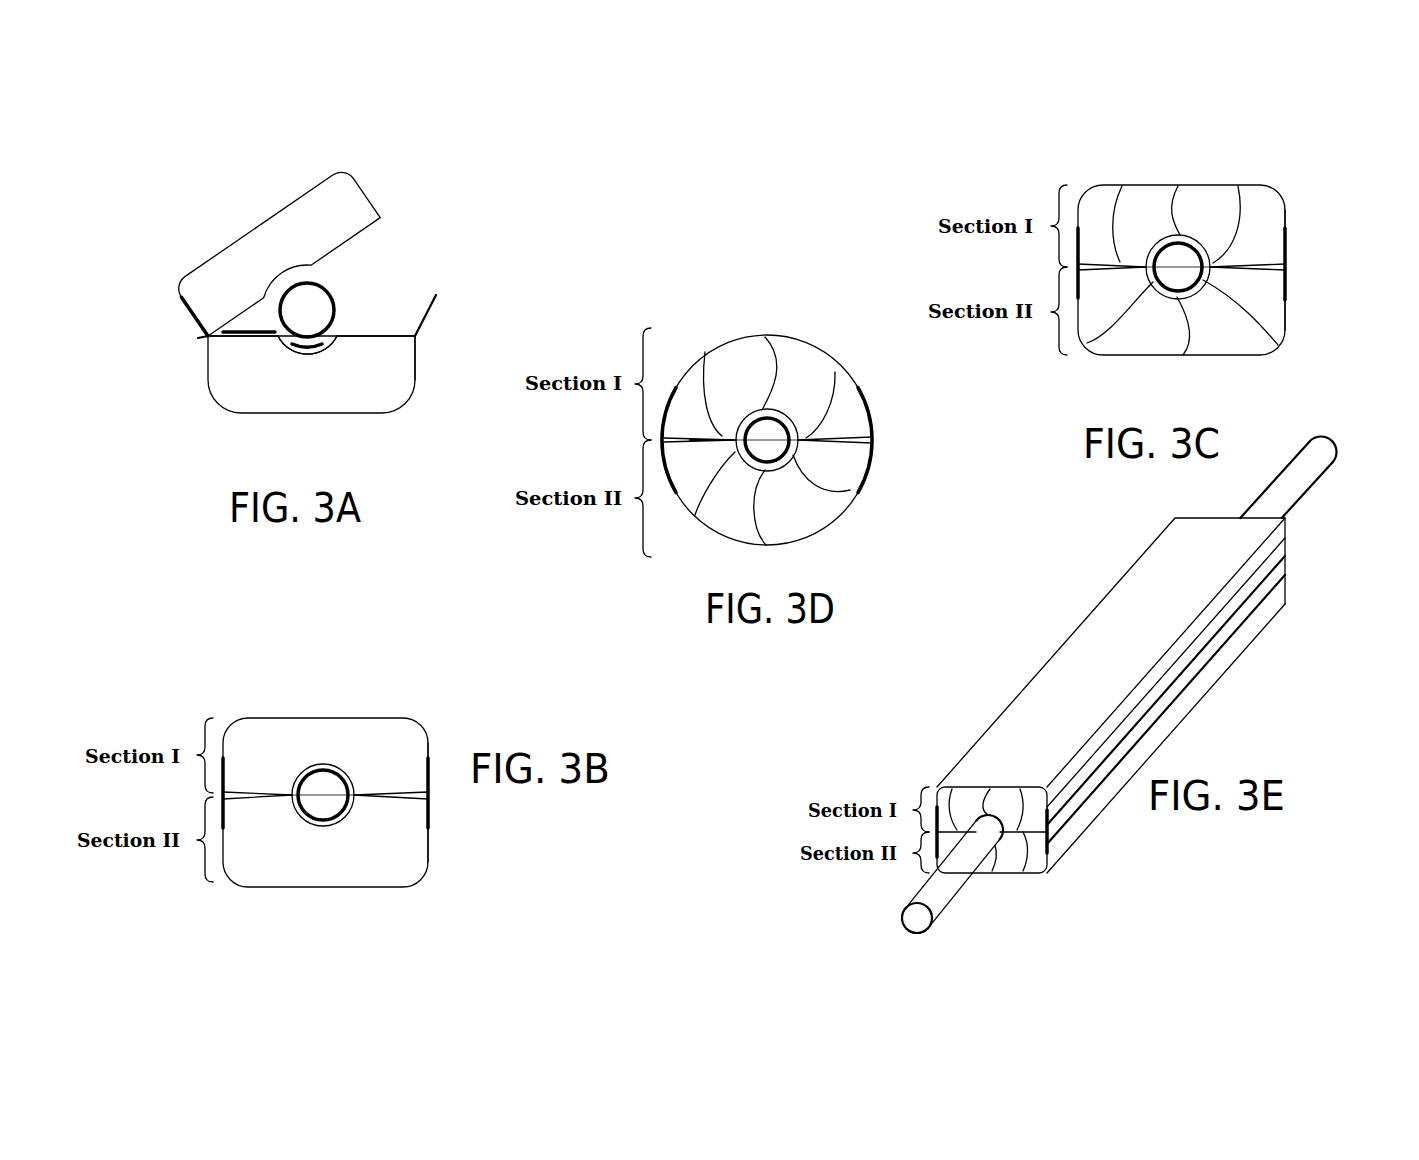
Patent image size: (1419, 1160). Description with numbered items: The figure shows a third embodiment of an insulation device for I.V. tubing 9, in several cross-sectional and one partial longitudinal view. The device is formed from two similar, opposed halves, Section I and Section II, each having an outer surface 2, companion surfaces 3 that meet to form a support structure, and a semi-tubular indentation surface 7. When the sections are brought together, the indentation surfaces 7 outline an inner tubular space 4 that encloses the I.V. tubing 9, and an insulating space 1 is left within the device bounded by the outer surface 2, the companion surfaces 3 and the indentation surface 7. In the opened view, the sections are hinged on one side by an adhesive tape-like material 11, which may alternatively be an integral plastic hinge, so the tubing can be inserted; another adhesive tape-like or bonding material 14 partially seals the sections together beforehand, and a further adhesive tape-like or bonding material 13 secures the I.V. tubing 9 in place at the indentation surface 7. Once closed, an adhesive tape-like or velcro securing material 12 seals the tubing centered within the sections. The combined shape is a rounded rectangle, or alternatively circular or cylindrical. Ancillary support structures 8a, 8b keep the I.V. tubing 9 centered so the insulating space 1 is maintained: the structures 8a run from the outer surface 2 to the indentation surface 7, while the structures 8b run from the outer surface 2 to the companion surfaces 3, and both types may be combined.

In FIG. 3A, the insulating space 1 is at (343, 217).
In FIG. 3B, the insulating space 1 is at (373, 743).
In FIG. 3D, the insulating space 1 is at (812, 367).
In FIG. 3C, the insulating space 1 is at (1263, 200).
In FIG. 3A, the outer surface 2 is at (323, 170).
In FIG. 3B, the outer surface 2 is at (322, 713).
In FIG. 3D, the outer surface 2 is at (733, 335).
In FIG. 3C, the outer surface 2 is at (1215, 182).
In FIG. 3E, the outer surface 2 is at (1060, 643).
In FIG. 3A, the companion surfaces 3 is at (333, 247).
In FIG. 3B, the companion surfaces 3 is at (265, 788).
In FIG. 3D, the companion surfaces 3 is at (833, 428).
In FIG. 3C, the companion surfaces 3 is at (1103, 260).
In FIG. 3E, the companion surfaces 3 is at (963, 825).
In FIG. 3B, the inner tubular space 4 is at (352, 790).
In FIG. 3D, the inner tubular space 4 is at (793, 428).
In FIG. 3C, the inner tubular space 4 is at (1213, 263).
In FIG. 3A, the indentation surface 7 is at (285, 262).
In FIG. 3B, the indentation surface 7 is at (310, 762).
In FIG. 3D, the indentation surface 7 is at (752, 407).
In FIG. 3C, the indentation surface 7 is at (1168, 298).
In FIG. 3E, the indentation surface 7 is at (998, 812).
In FIG. 3D, the ancillary support structures 8a is at (767, 510).
In FIG. 3C, the ancillary support structures 8a is at (1240, 307).
In FIG. 3D, the ancillary support structures 8b is at (838, 397).
In FIG. 3C, the ancillary support structures 8b is at (1228, 208).
In FIG. 3A, the I.V. tubing 9 is at (337, 290).
In FIG. 3B, the I.V. tubing 9 is at (312, 782).
In FIG. 3D, the I.V. tubing 9 is at (758, 433).
In FIG. 3C, the I.V. tubing 9 is at (1167, 255).
In FIG. 3E, the I.V. tubing 9 is at (912, 893).
In FIG. 3A, the adhesive tape-like material 11 is at (196, 337).
In FIG. 3A, the adhesive tape-like or velcro securing material 12 is at (433, 325).
In FIG. 3B, the adhesive tape-like or velcro securing material 12 is at (437, 817).
In FIG. 3D, the adhesive tape-like or velcro securing material 12 is at (878, 462).
In FIG. 3C, the adhesive tape-like or velcro securing material 12 is at (1293, 287).
In FIG. 3E, the adhesive tape-like or velcro securing material 12 is at (1067, 823).
In FIG. 3A, the adhesive tape-like or bonding material 13 is at (325, 340).
In FIG. 3A, the adhesive tape-like or bonding material 14 is at (255, 318).
In FIG. 3D, the adhesive tape-like or bonding material 14 is at (718, 448).